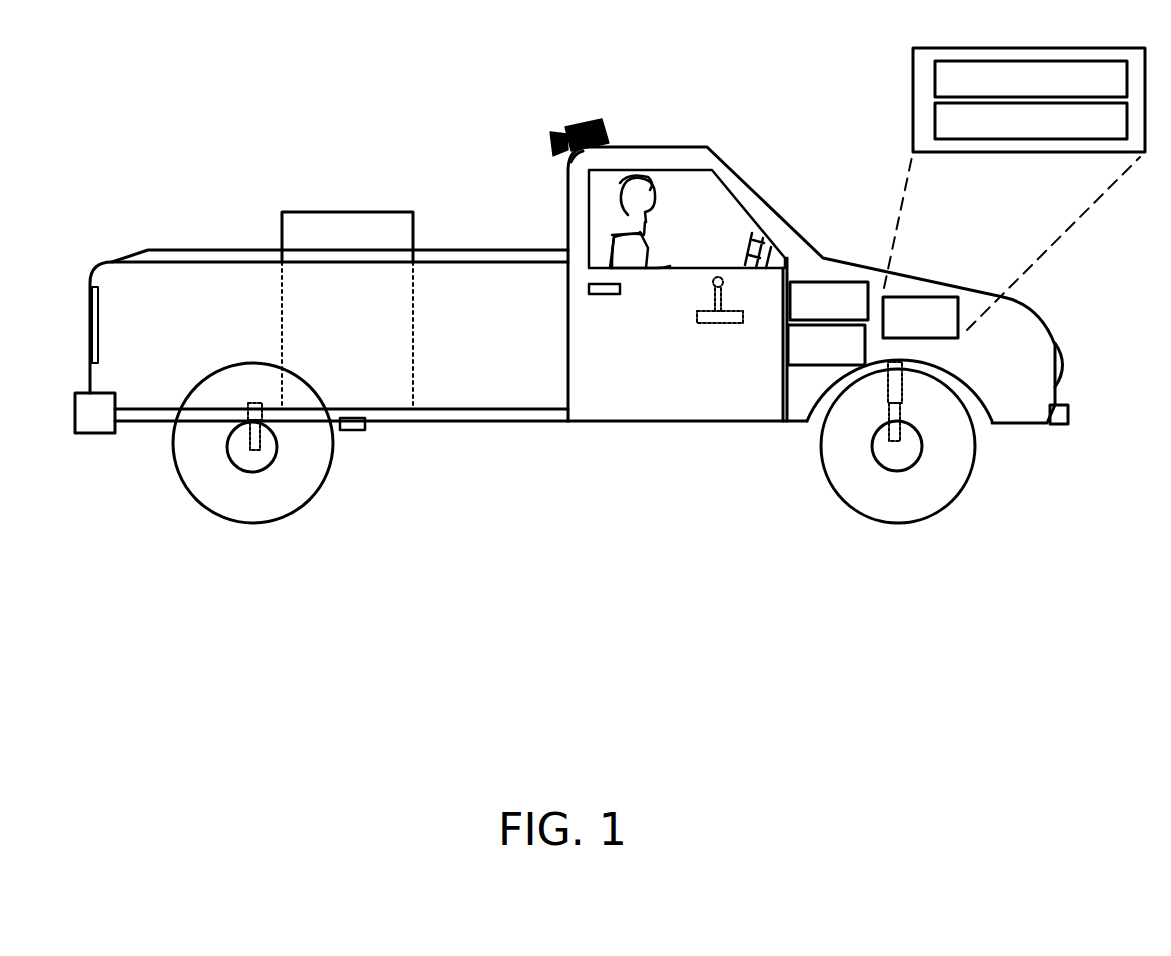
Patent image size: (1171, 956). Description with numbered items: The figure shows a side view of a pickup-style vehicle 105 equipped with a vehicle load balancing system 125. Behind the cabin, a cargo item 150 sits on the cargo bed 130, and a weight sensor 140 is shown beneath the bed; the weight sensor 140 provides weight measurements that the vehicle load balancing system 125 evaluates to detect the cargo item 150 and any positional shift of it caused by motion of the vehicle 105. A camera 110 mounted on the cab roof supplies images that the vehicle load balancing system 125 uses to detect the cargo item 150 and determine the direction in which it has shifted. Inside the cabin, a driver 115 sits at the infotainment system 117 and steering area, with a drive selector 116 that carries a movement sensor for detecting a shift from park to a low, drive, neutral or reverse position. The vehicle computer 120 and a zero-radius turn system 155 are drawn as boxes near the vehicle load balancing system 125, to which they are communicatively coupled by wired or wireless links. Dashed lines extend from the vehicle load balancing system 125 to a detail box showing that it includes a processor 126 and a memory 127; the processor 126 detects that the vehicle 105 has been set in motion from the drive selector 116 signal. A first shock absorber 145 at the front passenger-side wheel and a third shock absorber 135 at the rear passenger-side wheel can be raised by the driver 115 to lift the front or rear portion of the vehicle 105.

The vehicle 105 is at (268, 95).
The camera 110 is at (583, 122).
The driver 115 is at (652, 236).
The drive selector 116 is at (691, 317).
The infotainment system 117 is at (782, 245).
The vehicle computer 120 is at (847, 312).
The vehicle load balancing system 125 is at (938, 330).
The processor 126 is at (1117, 90).
The memory 127 is at (1117, 132).
The cargo bed 130 is at (466, 401).
The third shock absorber 135 is at (248, 447).
The weight sensor 140 is at (365, 431).
The first shock absorber 145 is at (891, 451).
The cargo item 150 is at (327, 212).
The zero-radius turn system 155 is at (844, 357).